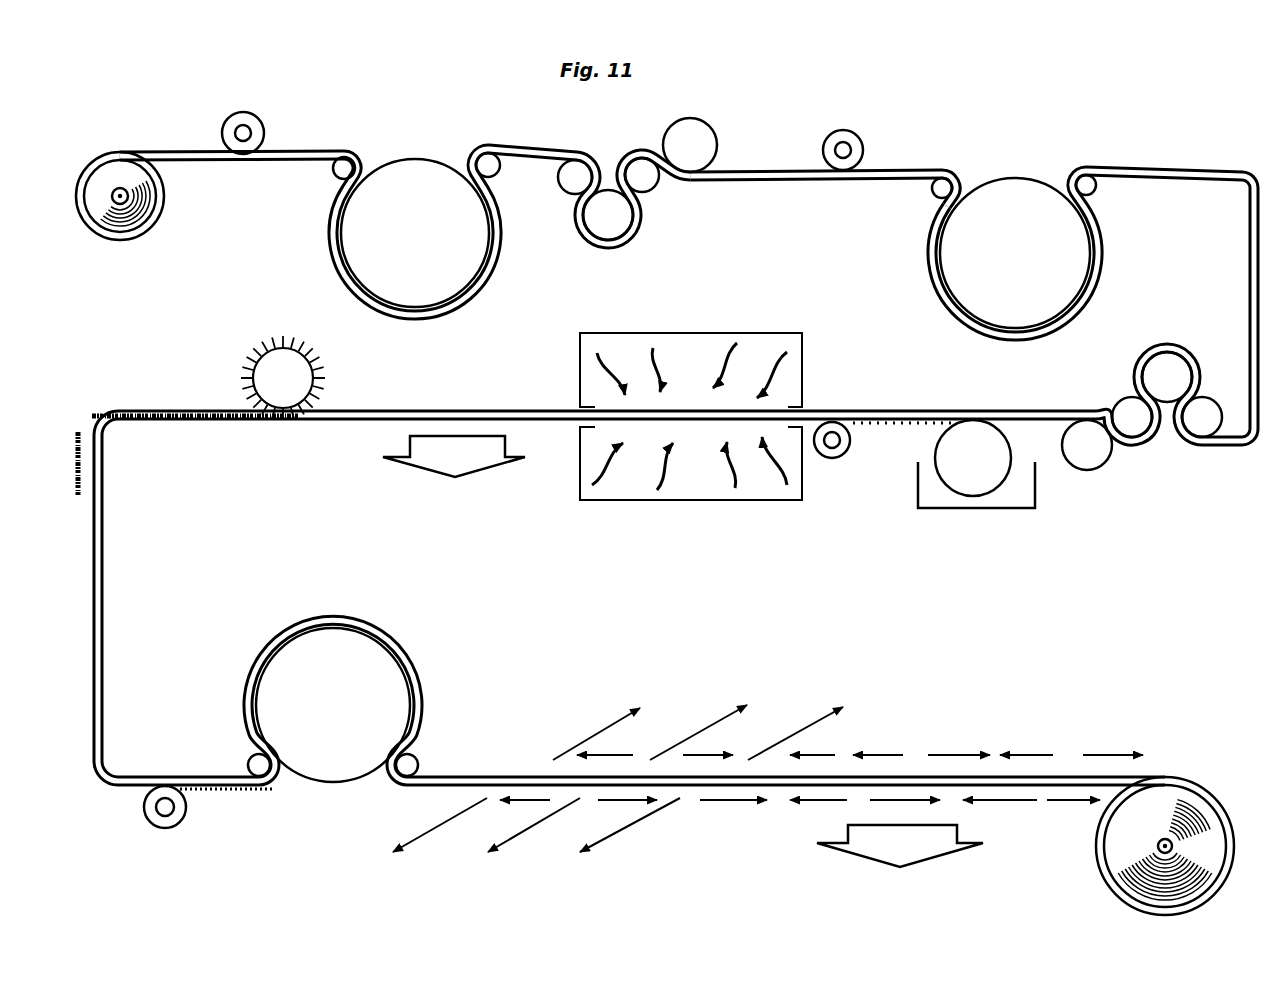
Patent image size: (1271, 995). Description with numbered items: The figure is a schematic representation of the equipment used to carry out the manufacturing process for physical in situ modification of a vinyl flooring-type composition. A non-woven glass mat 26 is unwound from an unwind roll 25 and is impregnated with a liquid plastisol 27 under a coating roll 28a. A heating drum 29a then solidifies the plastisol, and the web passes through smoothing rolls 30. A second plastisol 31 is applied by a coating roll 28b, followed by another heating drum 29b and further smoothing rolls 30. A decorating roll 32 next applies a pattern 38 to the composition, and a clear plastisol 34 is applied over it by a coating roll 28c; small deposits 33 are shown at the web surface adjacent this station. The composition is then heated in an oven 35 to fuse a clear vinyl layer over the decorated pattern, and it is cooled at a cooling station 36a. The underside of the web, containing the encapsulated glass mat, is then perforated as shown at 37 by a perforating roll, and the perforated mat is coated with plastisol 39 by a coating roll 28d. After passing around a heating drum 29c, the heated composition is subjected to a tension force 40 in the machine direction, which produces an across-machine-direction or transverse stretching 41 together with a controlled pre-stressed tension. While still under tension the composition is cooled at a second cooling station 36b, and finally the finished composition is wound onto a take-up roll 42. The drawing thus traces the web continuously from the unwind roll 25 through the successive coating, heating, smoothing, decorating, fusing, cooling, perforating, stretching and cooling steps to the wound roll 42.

The unwind roll 25 is at (115, 192).
The non-woven glass mat 26 is at (190, 151).
The liquid plastisol 27 is at (293, 150).
The coating roll 28a is at (250, 116).
The coating roll 28b is at (851, 134).
The coating roll 28c is at (830, 458).
The coating roll 28d is at (170, 828).
The heating drum 29a is at (400, 208).
The heating drum 29b is at (1000, 225).
The heating drum 29c is at (338, 752).
The smoothing rolls 30 is at (695, 148).
The second plastisol 31 is at (905, 172).
The decorating roll 32 is at (990, 456).
The adhesive 33 is at (863, 426).
The clear plastisol 34 is at (806, 420).
The oven 35 is at (733, 331).
The cooling station 36a is at (470, 456).
The cooling station 36b is at (925, 850).
The perforation 37 is at (175, 412).
The pattern 38 is at (300, 386).
The plastisol 39 is at (250, 793).
The tension force 40 is at (616, 752).
The transverse stretching 41 is at (648, 712).
The roll 42 is at (1170, 842).